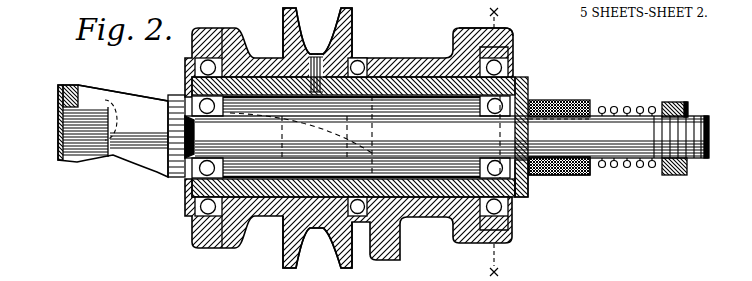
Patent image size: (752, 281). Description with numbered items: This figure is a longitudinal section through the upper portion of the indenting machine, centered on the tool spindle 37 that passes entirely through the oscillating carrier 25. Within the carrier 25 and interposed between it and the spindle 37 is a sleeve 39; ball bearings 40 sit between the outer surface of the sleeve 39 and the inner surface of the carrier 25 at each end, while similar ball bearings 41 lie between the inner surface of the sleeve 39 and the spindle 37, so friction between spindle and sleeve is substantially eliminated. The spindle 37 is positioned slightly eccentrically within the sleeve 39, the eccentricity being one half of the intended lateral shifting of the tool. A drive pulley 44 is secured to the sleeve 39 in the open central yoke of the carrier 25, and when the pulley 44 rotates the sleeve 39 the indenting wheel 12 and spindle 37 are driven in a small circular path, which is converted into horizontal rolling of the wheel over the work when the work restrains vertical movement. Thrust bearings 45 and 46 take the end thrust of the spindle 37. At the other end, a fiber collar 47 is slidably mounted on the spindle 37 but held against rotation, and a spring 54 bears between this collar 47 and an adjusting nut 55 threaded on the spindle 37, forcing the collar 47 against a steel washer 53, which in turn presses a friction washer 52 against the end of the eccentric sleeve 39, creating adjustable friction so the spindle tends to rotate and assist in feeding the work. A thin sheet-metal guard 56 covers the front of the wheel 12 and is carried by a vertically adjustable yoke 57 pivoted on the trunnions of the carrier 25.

The indenting wheel 12 is at (90, 162).
The oscillating carrier 25 is at (486, 56).
The tool spindle 37 is at (698, 160).
The sleeve 39 is at (402, 84).
The ball bearings 40 is at (522, 42).
The ball bearings 41 is at (530, 188).
The drive pulley 44 is at (287, 24).
The thrust bearing 45 is at (177, 96).
The thrust bearing 46 is at (360, 57).
The fiber collar 47 is at (560, 101).
The friction washer 52 is at (518, 199).
The steel washer 53 is at (528, 80).
The spring 54 is at (628, 103).
The adjusting nut 55 is at (672, 178).
The guard 56 is at (58, 120).
The yoke 57 is at (111, 94).